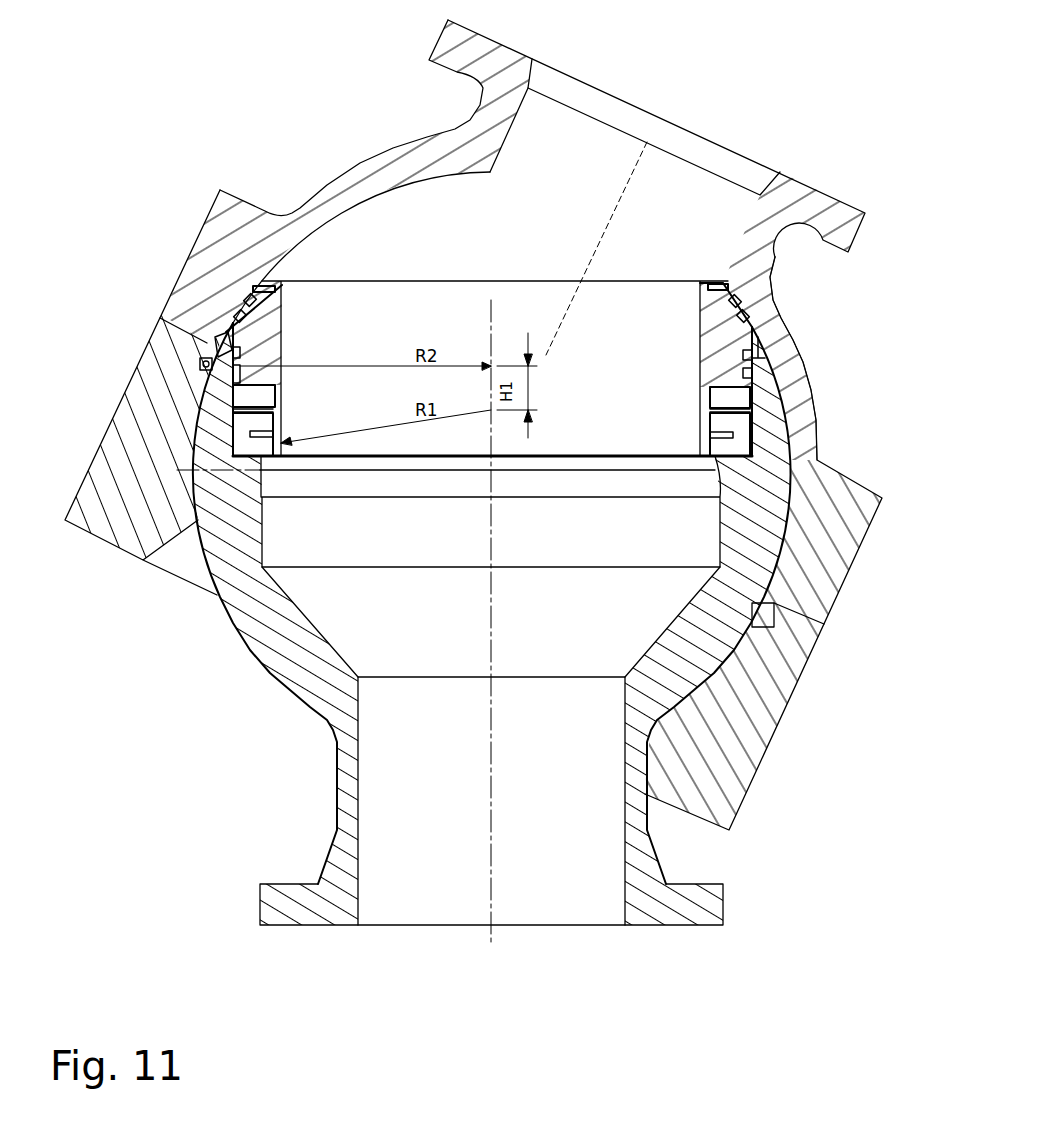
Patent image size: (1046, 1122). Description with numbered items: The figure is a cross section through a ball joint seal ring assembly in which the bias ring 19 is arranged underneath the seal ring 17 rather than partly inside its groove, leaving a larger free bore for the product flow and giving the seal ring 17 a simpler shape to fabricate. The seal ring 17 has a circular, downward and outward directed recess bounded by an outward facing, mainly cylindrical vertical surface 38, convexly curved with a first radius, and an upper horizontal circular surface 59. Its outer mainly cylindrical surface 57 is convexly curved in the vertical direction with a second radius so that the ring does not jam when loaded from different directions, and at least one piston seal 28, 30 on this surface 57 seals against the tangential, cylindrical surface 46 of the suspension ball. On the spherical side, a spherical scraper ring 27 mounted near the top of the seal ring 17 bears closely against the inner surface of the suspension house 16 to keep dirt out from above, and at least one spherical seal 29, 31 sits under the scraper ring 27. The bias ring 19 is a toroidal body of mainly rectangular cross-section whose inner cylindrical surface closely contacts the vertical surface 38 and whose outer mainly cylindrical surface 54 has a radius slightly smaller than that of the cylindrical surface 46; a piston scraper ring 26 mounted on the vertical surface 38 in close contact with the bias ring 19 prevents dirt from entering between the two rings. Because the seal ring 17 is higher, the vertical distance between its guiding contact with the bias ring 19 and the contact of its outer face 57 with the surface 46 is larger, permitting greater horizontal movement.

The suspension house 16 is at (803, 392).
The seal ring 17 is at (720, 371).
The bias ring 19 is at (738, 426).
The piston scraper ring 26 is at (252, 435).
The spherical scraper ring 27 is at (725, 286).
The piston seal 28 is at (757, 345).
The spherical seal 29 is at (735, 306).
The piston seal 30 is at (754, 372).
The spherical seal 31 is at (744, 317).
The outward facing mainly cylindrical vertical surface 38 is at (752, 433).
The tangential/cylindrical surface 46 is at (206, 366).
The outer mainly cylindrical surface 54 is at (733, 420).
The outer mainly cylindrical surface 57 is at (216, 340).
The upper horizontal circular surface 59 is at (736, 391).